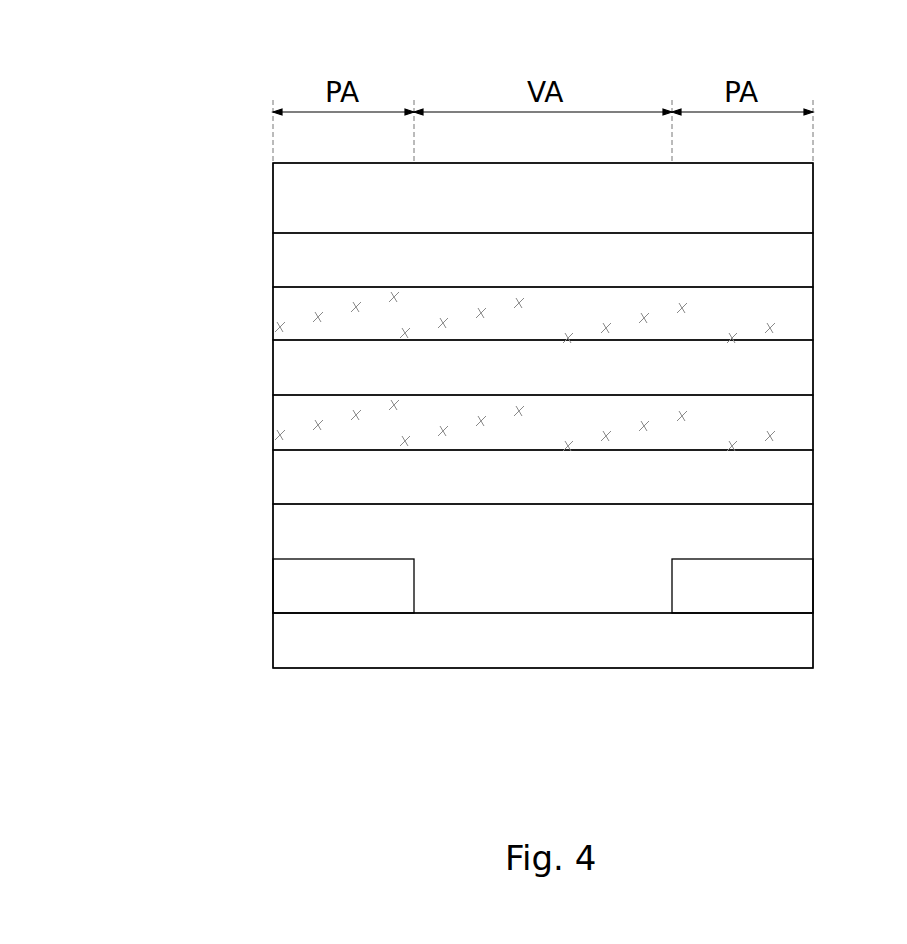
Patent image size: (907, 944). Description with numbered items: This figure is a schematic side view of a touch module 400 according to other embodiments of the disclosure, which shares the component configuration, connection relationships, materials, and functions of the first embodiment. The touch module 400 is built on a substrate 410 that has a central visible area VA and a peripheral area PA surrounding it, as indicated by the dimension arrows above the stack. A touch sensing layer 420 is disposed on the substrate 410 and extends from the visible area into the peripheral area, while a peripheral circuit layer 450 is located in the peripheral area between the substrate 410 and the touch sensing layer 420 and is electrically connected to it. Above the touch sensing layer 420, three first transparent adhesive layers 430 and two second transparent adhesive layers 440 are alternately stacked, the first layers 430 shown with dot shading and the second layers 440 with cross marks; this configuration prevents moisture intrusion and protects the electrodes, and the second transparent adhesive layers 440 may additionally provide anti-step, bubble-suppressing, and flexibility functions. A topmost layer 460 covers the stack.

The touch module 400 is at (90, 42).
The substrate 410 is at (813, 640).
The touch sensing layer 420 is at (813, 528).
The first transparent adhesive layer 430 is at (813, 261).
The second transparent adhesive layer 440 is at (813, 306).
The peripheral circuit layer 450 is at (813, 583).
The cover layer 460 is at (813, 197).